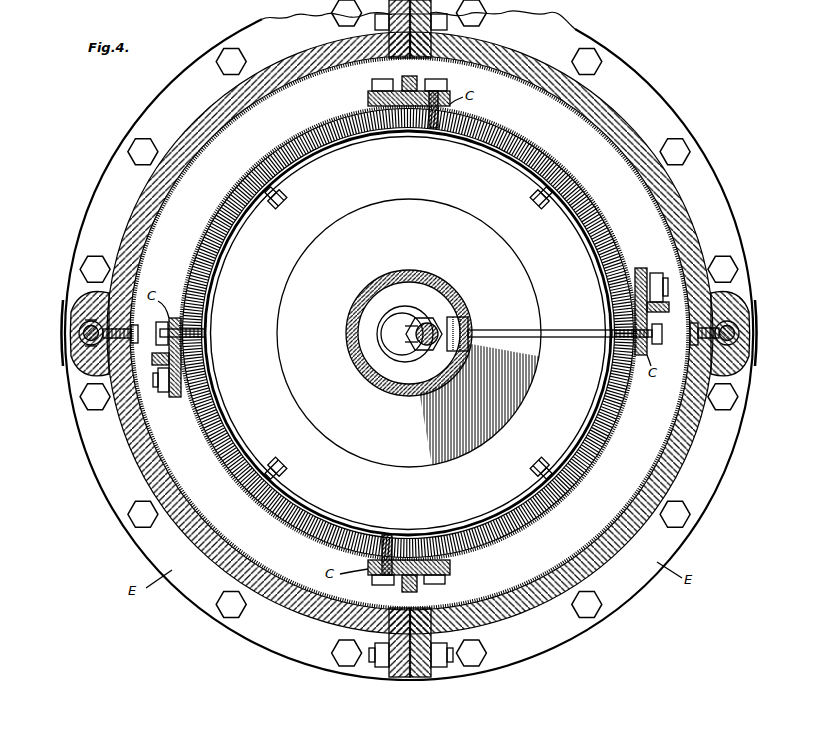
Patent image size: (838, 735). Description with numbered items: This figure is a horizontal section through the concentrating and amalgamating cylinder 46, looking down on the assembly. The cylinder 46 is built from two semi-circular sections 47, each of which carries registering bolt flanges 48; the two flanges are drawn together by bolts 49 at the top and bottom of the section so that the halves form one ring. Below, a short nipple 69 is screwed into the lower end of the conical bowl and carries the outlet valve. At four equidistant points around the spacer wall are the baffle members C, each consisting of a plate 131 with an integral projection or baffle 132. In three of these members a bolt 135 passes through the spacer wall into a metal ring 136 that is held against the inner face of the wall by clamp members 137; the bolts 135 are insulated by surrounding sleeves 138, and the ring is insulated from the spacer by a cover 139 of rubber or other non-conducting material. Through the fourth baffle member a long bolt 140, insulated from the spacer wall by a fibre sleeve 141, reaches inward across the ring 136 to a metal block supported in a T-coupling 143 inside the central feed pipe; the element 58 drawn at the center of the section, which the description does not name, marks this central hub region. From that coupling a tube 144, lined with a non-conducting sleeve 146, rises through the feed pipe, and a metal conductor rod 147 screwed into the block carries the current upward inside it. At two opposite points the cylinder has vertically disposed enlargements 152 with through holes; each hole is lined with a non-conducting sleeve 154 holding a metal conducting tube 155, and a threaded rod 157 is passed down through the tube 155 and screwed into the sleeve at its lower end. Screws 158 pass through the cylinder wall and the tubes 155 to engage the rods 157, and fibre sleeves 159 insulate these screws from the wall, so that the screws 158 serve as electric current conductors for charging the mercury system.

The concentrating and amalgamating cylinder 46 is at (409, 340).
The semi-circular sections 47 is at (281, 608).
The registering bolt flanges 48 is at (400, 677).
The bolts 49 is at (445, 670).
The central hub 58 is at (408, 272).
The short nipple 69 is at (402, 331).
The plates 131 is at (183, 398).
The projections or baffles 132 is at (668, 302).
The bolt 135 is at (388, 537).
The metal ring 136 is at (452, 537).
The clamp members 137 is at (284, 193).
The sleeves 138 is at (408, 333).
The cover 139 is at (220, 422).
The long bolt 140 is at (556, 332).
The fibre sleeve 141 is at (650, 343).
The T-coupling 143 is at (412, 350).
The tube 144 is at (428, 321).
The non-conducting sleeve 146 is at (440, 354).
The metal conductor rod 147 is at (418, 323).
The enlargements 152 is at (742, 350).
The non-conducting sleeves 154 is at (80, 322).
The metal conducting tubes 155 is at (82, 333).
The rods 157 is at (748, 328).
The screws 158 is at (135, 330).
The fibre sleeves 159 is at (708, 324).